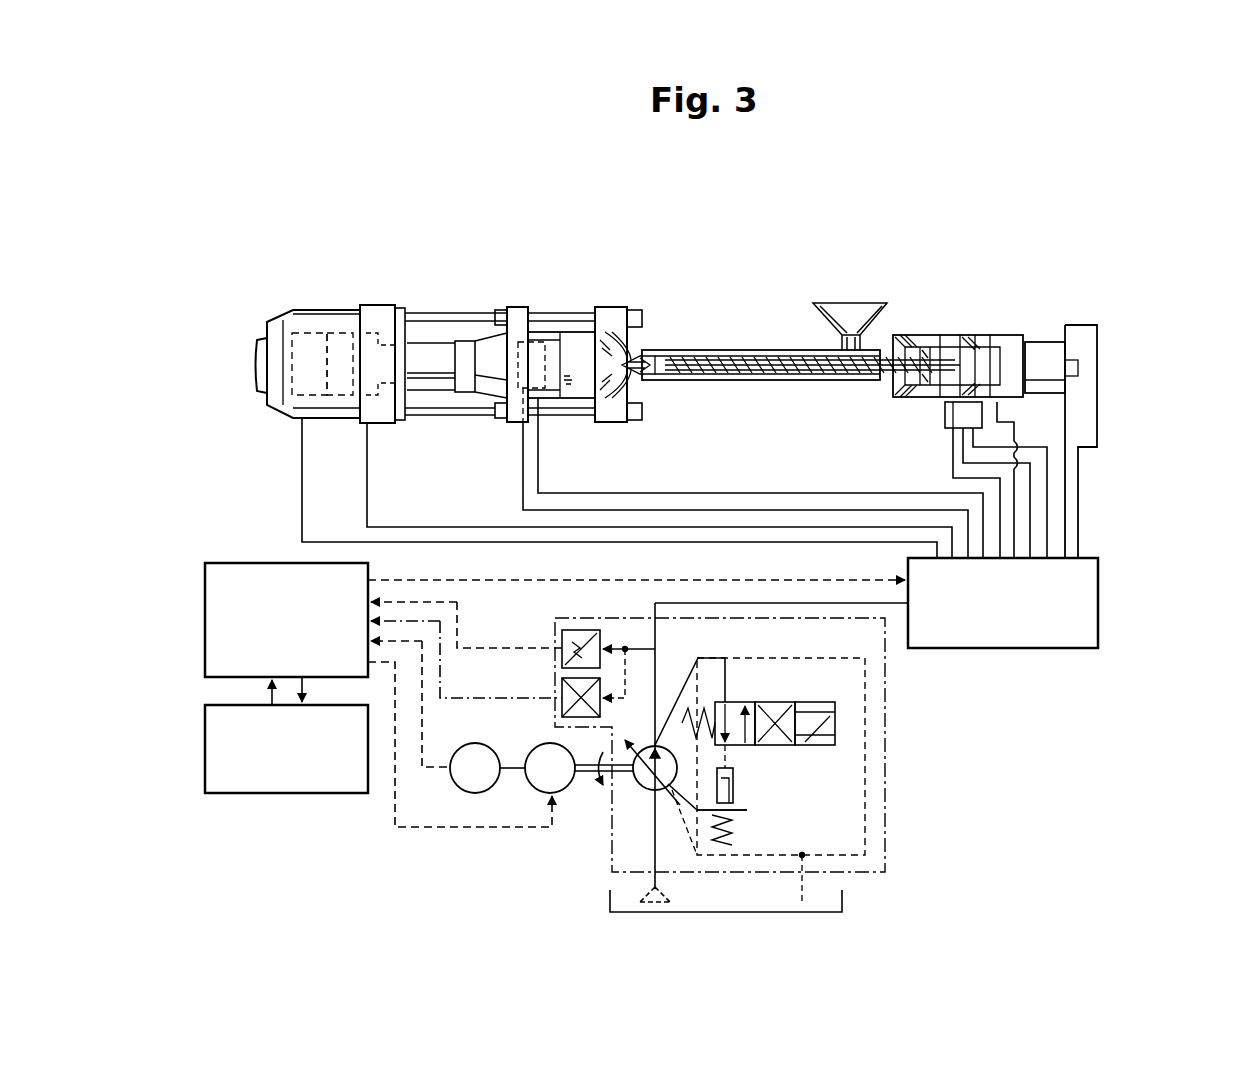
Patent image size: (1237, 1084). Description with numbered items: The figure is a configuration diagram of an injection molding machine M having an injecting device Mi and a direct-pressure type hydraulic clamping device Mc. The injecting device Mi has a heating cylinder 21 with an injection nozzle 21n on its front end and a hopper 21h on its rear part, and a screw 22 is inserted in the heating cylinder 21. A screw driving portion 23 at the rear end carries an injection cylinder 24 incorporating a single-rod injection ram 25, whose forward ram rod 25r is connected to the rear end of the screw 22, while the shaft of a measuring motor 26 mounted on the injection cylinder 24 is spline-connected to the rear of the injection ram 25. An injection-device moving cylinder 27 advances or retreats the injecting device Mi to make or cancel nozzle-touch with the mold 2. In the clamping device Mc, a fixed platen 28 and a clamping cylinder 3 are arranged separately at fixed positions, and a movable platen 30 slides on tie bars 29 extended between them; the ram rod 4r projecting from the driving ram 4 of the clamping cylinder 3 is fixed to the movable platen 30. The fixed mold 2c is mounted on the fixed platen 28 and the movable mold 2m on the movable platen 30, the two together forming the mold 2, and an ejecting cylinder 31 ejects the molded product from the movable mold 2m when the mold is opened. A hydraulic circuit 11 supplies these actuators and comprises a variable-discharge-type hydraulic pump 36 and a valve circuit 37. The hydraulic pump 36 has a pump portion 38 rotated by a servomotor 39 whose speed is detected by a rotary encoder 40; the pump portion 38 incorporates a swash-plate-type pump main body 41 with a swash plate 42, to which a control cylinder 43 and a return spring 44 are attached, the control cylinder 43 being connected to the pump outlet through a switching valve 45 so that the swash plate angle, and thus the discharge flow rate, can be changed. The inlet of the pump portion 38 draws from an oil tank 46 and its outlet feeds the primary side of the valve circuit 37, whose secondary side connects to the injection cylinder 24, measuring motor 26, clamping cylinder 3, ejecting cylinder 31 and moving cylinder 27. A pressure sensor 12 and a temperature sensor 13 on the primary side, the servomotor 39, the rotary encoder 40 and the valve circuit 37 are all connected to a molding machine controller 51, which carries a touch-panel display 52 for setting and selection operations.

The clamping cylinder 3 is at (300, 330).
The driving ram 4 is at (325, 400).
The ram rod 4r is at (432, 345).
The clamping device Mc is at (428, 262).
The tie bars 29 is at (460, 312).
The movable platen 30 is at (516, 305).
The ejecting cylinder 31 is at (510, 370).
The mold 2 is at (572, 363).
The movable mold 2m is at (550, 400).
The fixed mold 2c is at (575, 400).
The fixed platen 28 is at (612, 305).
The injection nozzle 21n is at (622, 362).
The heating cylinder 21 is at (723, 385).
The screw 22 is at (770, 350).
The hopper 21h is at (845, 303).
The injection cylinder 24 is at (960, 335).
The ram rod 25r is at (920, 335).
The injection ram 25 is at (985, 335).
The measuring motor 26 is at (1043, 342).
The injecting device Mi is at (1025, 282).
The injection molding machine M is at (1095, 298).
The screw driving portion 23 is at (1113, 352).
The injection-device moving cylinder 27 is at (950, 415).
The molding machine controller 51 is at (236, 563).
The display 52 is at (265, 793).
The valve circuit 37 is at (1098, 591).
The pump portion 38 is at (886, 780).
The variable-discharge-type hydraulic pump 36 is at (902, 825).
The pressure sensor 12 is at (562, 640).
The temperature sensor 13 is at (562, 696).
The rotary encoder 40 is at (508, 733).
The servomotor 39 is at (558, 793).
The pump main body 41 is at (646, 792).
The switching valve 45 is at (780, 702).
The control cylinder 43 is at (735, 785).
The swash plate 42 is at (742, 808).
The return spring 44 is at (740, 830).
The oil tank 46 is at (842, 904).
The hydraulic circuit 11 is at (992, 760).